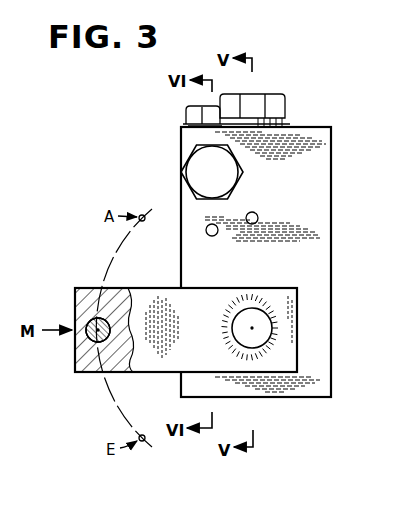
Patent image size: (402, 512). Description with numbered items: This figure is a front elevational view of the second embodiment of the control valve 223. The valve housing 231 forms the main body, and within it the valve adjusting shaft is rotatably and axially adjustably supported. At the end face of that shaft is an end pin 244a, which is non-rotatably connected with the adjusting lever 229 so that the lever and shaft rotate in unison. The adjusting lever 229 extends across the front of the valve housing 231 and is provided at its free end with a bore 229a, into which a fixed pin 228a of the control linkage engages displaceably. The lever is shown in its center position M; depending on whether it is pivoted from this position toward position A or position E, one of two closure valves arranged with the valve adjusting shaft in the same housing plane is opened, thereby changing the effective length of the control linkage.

The control valve 223 is at (299, 120).
The valve housing 231 is at (332, 226).
The adjusting lever 229 is at (167, 288).
The bore 229a is at (90, 339).
The fixed pin 228a is at (98, 332).
The end pin 244a is at (258, 320).